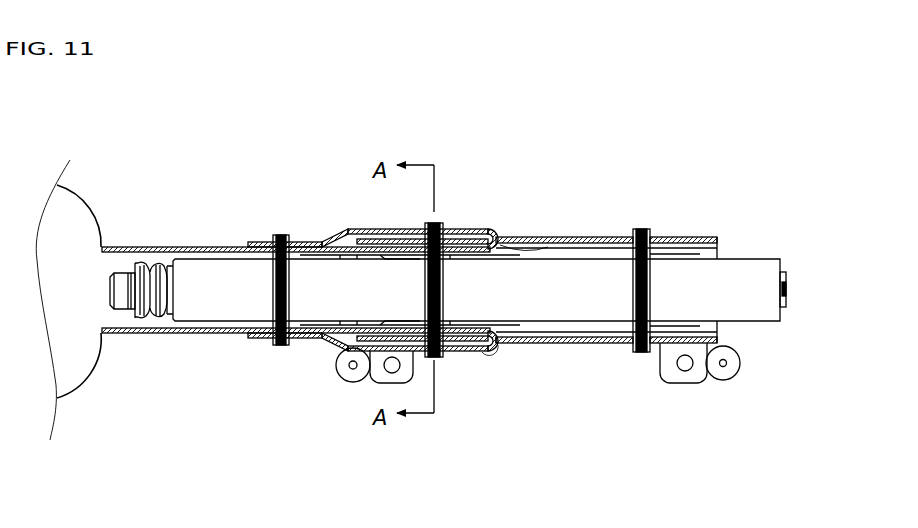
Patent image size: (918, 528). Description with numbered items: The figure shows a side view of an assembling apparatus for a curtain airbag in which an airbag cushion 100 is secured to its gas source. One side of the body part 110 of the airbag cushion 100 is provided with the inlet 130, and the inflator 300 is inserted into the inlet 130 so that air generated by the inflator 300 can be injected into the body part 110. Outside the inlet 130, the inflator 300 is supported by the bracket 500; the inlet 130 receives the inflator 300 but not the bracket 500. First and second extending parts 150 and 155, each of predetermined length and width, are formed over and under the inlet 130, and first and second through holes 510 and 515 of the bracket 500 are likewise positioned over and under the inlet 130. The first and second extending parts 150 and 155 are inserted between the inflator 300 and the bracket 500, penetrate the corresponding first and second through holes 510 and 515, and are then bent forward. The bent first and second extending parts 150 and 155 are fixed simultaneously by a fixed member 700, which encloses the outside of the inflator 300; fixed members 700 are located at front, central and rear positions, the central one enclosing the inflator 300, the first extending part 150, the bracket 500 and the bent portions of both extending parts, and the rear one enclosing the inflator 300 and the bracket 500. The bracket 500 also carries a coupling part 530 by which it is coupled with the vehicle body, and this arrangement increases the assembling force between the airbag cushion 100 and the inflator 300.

The airbag cushion 100 is at (99, 190).
The body part 110 is at (78, 229).
The inlet 130 is at (128, 334).
The first extending part 150 is at (491, 229).
The second extending part 155 is at (490, 355).
The inflator 300 is at (205, 312).
The bracket 500 is at (610, 343).
The first through hole 510 is at (549, 244).
The second through hole 515 is at (500, 344).
The coupling part 530 is at (372, 383).
The fixed member 700 is at (640, 228).